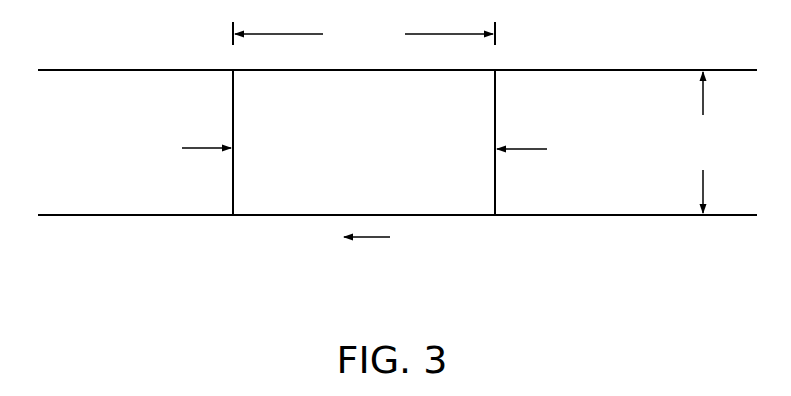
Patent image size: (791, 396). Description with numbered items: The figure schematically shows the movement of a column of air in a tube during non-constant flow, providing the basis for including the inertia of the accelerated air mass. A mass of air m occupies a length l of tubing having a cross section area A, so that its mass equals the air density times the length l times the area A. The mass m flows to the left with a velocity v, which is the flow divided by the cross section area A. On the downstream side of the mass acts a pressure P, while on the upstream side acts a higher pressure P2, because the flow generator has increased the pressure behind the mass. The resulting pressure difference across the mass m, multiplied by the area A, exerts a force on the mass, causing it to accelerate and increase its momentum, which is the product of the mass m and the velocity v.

The mass of air m is at (364, 142).
The length of tubing l is at (364, 34).
The cross section area A is at (703, 142).
The pressure P is at (206, 165).
The pressure plus pressure difference P2 is at (542, 167).
The velocity v is at (359, 253).